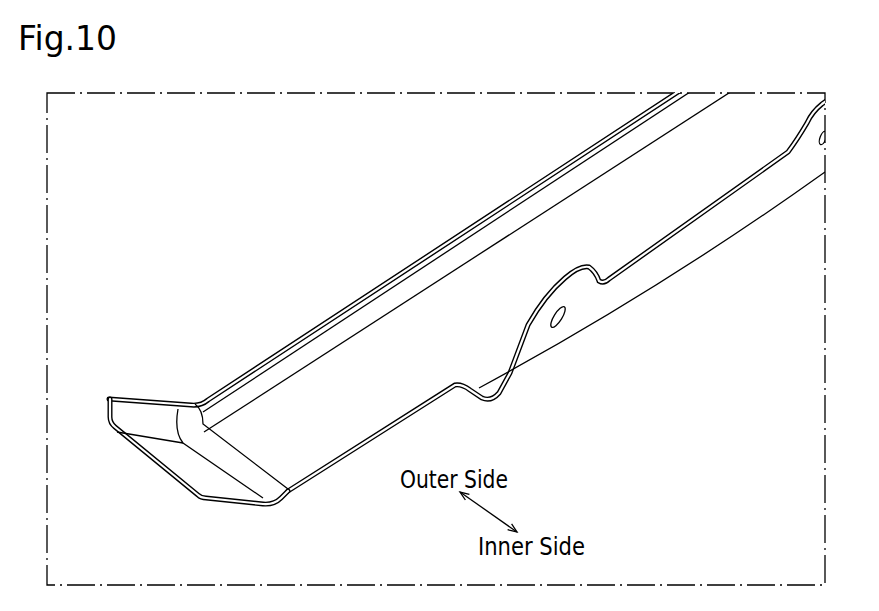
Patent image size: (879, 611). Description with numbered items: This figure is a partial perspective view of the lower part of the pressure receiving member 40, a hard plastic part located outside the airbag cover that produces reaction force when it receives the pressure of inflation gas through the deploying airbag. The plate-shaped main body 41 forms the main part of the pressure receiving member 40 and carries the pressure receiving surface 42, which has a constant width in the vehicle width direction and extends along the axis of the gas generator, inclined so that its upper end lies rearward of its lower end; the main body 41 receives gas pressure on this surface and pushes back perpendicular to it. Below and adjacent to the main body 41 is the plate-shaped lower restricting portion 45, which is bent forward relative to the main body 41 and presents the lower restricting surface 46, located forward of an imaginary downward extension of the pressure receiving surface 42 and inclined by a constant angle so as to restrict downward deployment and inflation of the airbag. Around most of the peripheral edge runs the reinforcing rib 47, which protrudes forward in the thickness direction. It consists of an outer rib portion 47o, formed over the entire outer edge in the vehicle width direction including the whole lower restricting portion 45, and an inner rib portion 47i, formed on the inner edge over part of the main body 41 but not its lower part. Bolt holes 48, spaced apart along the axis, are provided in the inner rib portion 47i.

The pressure receiving member 40 is at (333, 281).
The main body 41 is at (514, 261).
The pressure receiving surface 42 is at (568, 223).
The lower restricting portion 45 is at (191, 467).
The lower restricting surface 46 is at (187, 467).
The reinforcing rib 47 is at (470, 290).
The outer rib portion 47o is at (410, 290).
The inner rib portion 47i is at (700, 240).
The bolt holes 48 is at (562, 323).